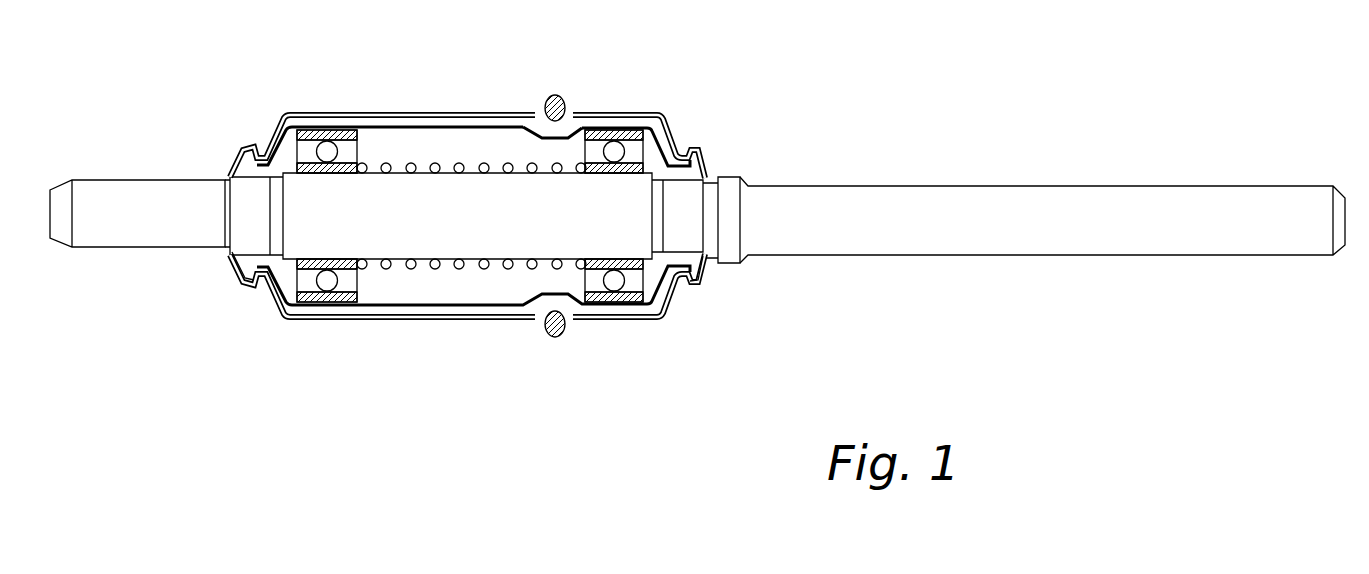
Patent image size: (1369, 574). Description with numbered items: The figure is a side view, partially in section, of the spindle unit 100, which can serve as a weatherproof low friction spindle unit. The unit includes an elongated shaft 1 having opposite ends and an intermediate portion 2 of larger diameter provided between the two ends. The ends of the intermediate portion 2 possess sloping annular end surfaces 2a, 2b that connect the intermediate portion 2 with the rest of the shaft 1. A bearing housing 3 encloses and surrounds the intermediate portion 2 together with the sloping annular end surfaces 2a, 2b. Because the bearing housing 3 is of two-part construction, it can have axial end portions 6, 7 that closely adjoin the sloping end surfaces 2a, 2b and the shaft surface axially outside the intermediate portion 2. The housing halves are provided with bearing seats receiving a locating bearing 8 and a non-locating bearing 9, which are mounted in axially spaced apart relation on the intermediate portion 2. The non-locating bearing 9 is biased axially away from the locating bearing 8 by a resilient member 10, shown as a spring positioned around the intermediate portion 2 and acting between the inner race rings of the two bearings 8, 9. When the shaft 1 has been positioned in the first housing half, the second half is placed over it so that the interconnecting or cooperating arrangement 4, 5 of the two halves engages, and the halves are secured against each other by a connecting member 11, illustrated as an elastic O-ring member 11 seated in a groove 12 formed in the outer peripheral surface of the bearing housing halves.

The shaft 1 is at (1010, 181).
The intermediate portion 2 is at (425, 225).
The sloping annular end surface 2a is at (278, 203).
The sloping annular end surface 2b is at (672, 205).
The bearing housing 3 is at (338, 109).
The interconnecting arrangement 4 is at (428, 122).
The interconnecting arrangement 5 is at (355, 312).
The axial end portion 6 is at (232, 257).
The axial end portion 7 is at (703, 253).
The locating bearing 8 is at (612, 133).
The non-locating bearing 9 is at (315, 300).
The resilient member 10 is at (448, 270).
The connecting member 11 is at (566, 100).
The groove 12 is at (529, 122).
The spindle unit 100 is at (469, 206).